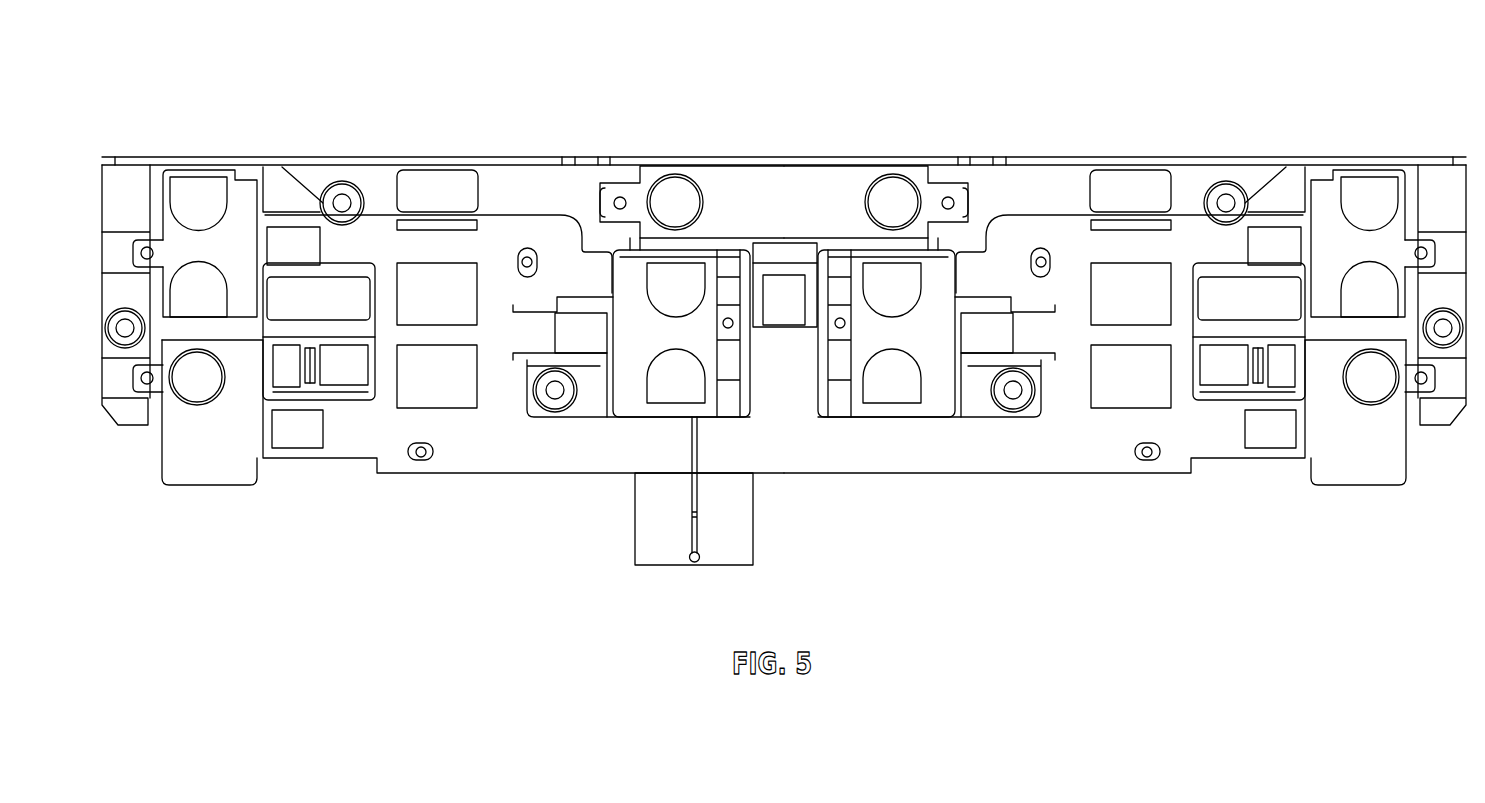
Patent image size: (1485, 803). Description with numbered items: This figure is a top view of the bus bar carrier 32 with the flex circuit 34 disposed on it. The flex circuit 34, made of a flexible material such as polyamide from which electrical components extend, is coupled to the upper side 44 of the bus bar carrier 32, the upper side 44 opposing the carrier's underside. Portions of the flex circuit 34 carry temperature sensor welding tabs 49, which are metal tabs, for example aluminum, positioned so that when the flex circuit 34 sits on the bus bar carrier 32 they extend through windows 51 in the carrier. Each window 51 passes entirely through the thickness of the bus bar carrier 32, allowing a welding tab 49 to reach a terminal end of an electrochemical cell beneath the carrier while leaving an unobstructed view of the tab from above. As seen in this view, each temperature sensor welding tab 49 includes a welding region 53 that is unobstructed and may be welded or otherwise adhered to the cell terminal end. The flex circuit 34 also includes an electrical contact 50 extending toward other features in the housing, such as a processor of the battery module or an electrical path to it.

The bus bar carrier 32 is at (1205, 60).
The flex circuit 34 is at (1070, 275).
The upper side 44 is at (128, 176).
The temperature sensor welding tab 49 is at (342, 375).
The electrical contact 50 is at (798, 547).
The window 51 is at (317, 344).
The welding region 53 is at (285, 375).